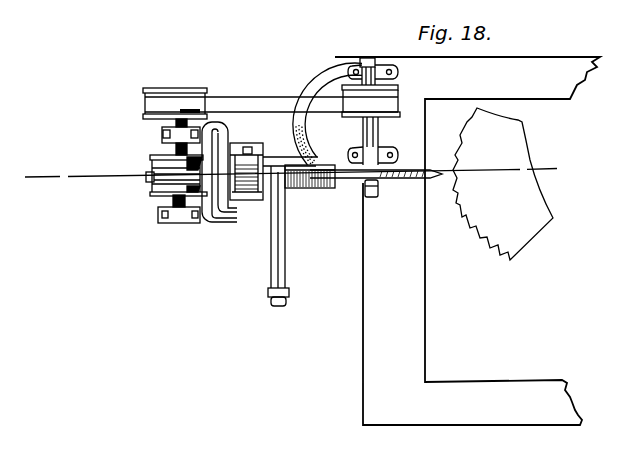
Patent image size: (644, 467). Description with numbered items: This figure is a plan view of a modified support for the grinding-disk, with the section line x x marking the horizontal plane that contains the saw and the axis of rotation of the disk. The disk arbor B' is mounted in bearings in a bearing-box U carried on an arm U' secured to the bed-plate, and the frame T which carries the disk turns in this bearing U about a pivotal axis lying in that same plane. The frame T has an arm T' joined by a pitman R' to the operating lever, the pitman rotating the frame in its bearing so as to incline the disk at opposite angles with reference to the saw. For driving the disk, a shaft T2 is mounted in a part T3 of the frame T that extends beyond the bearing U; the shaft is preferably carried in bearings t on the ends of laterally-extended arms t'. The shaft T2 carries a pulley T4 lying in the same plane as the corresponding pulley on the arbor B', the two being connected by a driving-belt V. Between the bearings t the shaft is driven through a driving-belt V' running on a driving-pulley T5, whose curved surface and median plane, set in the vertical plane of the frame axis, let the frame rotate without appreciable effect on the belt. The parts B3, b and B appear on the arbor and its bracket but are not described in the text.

The section line x is at (291, 163).
The pulley T4 is at (175, 93).
The driving-belt V is at (271, 93).
The frame T is at (312, 113).
The upper drum with bolt bracket B3 is at (399, 86).
The arbor B' is at (374, 141).
The pointed rod b is at (433, 171).
The nut B is at (386, 190).
The arm U' is at (310, 191).
The arm T' is at (288, 227).
The pitman R' is at (288, 296).
The bearing-box U is at (246, 160).
The laterally-extended arms t' is at (219, 184).
The part of the frame T3 is at (219, 221).
The bearings t is at (168, 184).
The shaft T2 is at (158, 152).
The driving-belt V' is at (156, 182).
The driving-pulley T5 is at (156, 192).